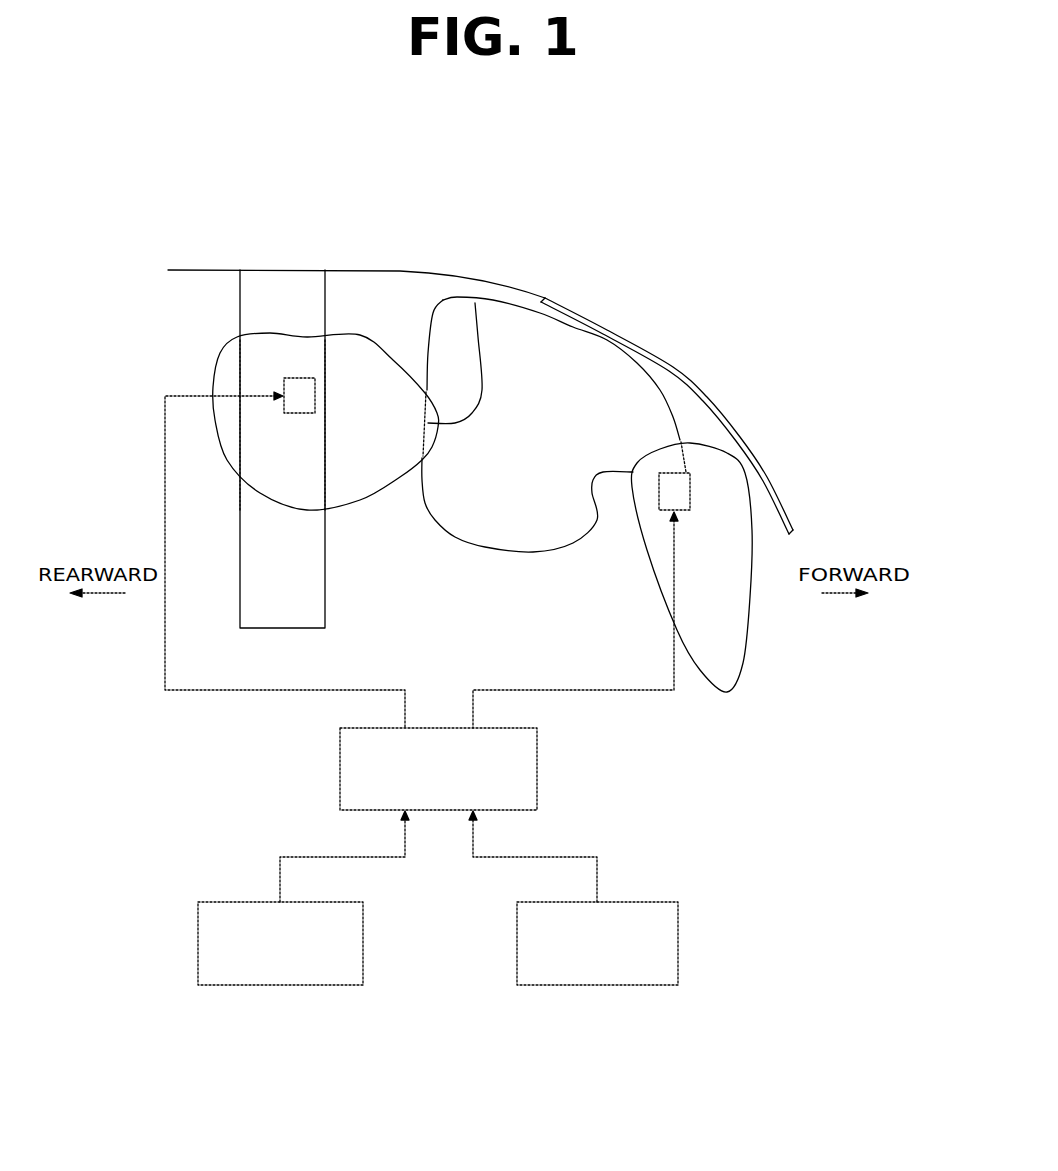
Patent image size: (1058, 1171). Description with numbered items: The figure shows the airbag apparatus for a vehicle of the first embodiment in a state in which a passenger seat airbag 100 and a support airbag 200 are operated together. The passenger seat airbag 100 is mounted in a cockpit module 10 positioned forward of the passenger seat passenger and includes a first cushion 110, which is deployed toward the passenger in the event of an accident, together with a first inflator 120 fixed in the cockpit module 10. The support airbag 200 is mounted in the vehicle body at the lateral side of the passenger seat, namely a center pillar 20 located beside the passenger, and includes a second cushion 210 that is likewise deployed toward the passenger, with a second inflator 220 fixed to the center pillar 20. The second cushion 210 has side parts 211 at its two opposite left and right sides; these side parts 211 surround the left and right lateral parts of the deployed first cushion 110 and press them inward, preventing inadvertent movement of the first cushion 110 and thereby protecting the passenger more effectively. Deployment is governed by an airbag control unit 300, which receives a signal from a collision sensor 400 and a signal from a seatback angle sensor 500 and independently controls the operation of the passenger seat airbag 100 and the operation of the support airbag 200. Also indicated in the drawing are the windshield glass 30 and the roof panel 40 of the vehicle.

The cockpit module 10 is at (733, 648).
The center pillar 20 is at (277, 287).
The windshield glass 30 is at (677, 367).
The roof panel 40 is at (205, 270).
The passenger seat airbag 100 is at (632, 417).
The first cushion 110 is at (607, 377).
The first inflator 120 is at (673, 493).
The support airbag 200 is at (318, 357).
The second cushion 210 is at (363, 340).
The side parts 211 is at (480, 400).
The second inflator 220 is at (297, 397).
The airbag control unit 300 is at (540, 768).
The collision sensor 400 is at (680, 940).
The seatback angle sensor 500 is at (198, 942).